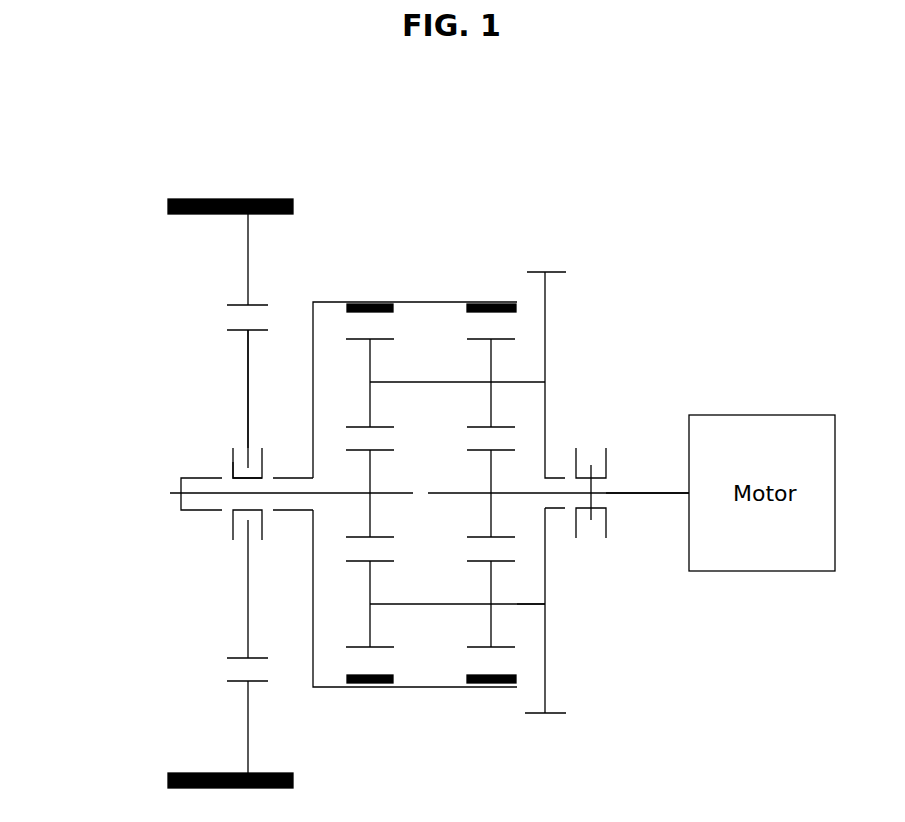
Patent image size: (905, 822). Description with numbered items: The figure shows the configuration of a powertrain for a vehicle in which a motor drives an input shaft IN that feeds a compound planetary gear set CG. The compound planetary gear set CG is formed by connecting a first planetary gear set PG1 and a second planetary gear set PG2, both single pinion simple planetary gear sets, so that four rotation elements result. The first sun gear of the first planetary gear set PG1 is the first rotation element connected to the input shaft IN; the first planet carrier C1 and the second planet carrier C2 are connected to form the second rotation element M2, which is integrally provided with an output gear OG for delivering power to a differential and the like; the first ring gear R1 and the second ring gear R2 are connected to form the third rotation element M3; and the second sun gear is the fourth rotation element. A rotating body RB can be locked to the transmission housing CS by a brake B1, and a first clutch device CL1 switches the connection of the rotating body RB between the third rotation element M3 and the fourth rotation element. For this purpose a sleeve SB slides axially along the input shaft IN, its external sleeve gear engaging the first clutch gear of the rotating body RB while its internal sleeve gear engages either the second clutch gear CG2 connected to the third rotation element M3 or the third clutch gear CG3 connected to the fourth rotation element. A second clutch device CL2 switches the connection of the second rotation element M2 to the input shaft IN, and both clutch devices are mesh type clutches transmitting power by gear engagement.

The transmission housing CS is at (192, 199).
The brake B1 is at (226, 318).
The rotating body RB is at (248, 363).
The first clutch device CL1 is at (231, 447).
The sleeve SB is at (233, 462).
The third clutch gear CG3 is at (197, 510).
The second clutch gear CG2 is at (353, 540).
The third rotation element M3 is at (328, 300).
The compound planetary gear set CG is at (502, 195).
The second planetary gear set PG2 is at (369, 298).
The first planetary gear set PG1 is at (484, 298).
The output gear OG is at (558, 270).
The second rotation element M2 is at (520, 382).
The second clutch device CL2 is at (592, 447).
The input shaft IN is at (639, 492).
The second planet carrier C2 is at (415, 603).
The first planet carrier C1 is at (517, 604).
The second ring gear R2 is at (368, 690).
The first ring gear R1 is at (487, 690).